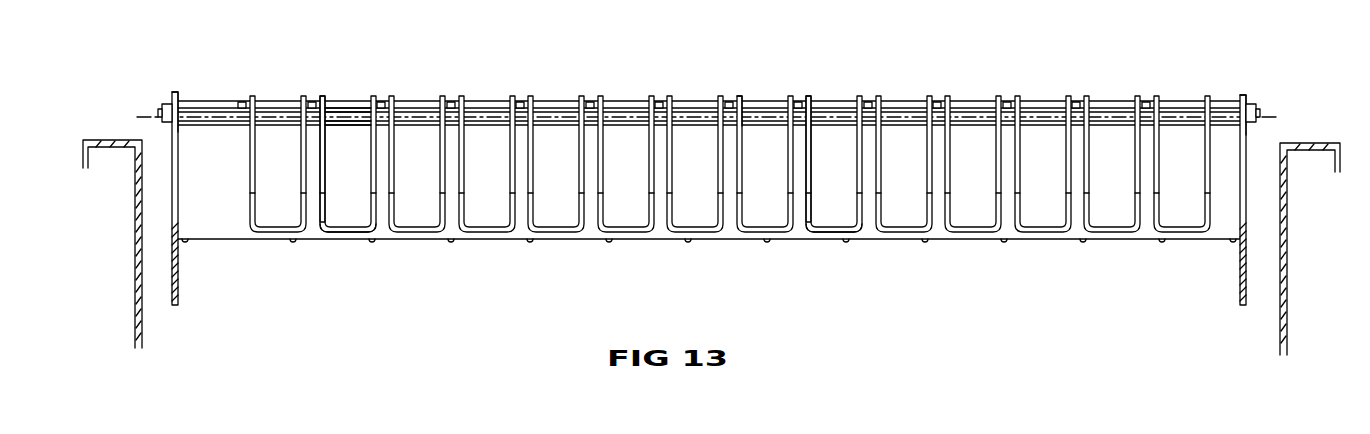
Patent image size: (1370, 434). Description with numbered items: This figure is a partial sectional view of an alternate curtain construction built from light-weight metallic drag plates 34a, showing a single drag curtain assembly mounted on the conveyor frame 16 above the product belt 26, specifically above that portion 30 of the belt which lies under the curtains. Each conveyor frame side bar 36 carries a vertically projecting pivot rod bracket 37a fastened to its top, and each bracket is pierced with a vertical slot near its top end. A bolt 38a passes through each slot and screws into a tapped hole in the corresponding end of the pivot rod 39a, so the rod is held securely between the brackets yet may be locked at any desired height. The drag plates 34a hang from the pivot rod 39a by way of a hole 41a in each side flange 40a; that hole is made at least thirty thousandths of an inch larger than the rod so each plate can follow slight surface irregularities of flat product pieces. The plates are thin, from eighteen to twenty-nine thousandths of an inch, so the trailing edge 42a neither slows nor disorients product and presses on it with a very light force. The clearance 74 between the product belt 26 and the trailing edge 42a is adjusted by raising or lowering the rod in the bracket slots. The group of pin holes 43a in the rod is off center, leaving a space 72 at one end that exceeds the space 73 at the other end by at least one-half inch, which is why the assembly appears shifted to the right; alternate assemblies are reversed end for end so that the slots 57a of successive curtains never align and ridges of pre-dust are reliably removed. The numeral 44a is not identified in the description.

The conveyor frame 16 is at (192, 260).
The product belt 26 is at (614, 250).
The portion of the product belt under the curtains 30 is at (730, 240).
The drag plate 34a is at (382, 93).
The conveyor frame side bar 36 is at (178, 283).
The pivot rod bracket 37a is at (173, 189).
The bolt 38a is at (170, 104).
The pivot rod 39a is at (220, 107).
The side flange 40a is at (330, 128).
The hole 41a is at (364, 118).
The trailing edge 42a is at (348, 232).
The pin hole 43a is at (726, 99).
The hook upper leg 44a is at (733, 98).
The slot 57a is at (803, 216).
The space from one rod end to first pin hole 72 is at (190, 96).
The space from last pin hole to other rod end 73 is at (1226, 94).
The clearance 74 is at (833, 234).